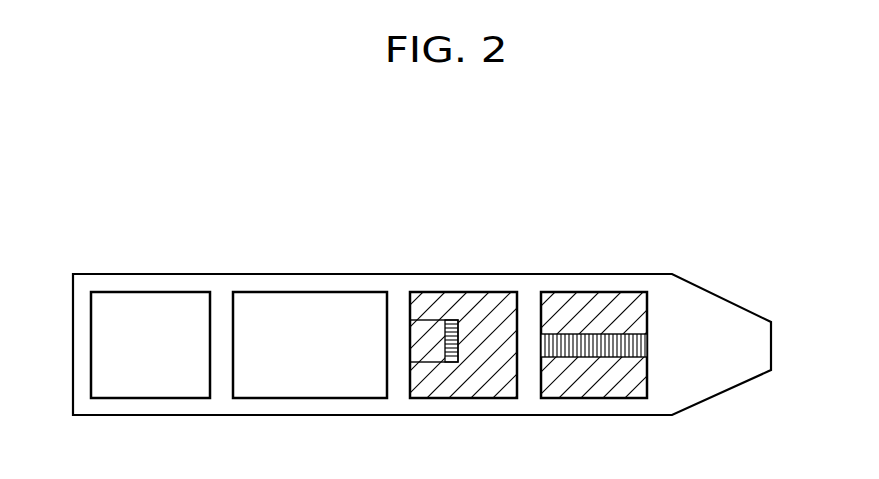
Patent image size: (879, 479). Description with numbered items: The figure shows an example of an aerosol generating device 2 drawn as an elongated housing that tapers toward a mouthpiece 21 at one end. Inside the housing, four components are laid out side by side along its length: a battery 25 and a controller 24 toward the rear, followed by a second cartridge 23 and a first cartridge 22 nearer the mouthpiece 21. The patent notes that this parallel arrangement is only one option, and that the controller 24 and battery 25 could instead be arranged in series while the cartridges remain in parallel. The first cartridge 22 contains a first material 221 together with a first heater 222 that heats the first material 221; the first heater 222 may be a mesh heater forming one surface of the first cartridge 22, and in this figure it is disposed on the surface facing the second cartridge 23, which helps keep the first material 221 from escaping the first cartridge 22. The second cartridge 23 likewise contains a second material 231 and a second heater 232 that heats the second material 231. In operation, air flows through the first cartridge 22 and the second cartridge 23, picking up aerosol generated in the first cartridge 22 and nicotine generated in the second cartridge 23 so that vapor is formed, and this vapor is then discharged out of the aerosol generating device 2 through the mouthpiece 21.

The aerosol generating device 2 is at (716, 188).
The mouthpiece 21 is at (735, 316).
The first cartridge 22 is at (600, 400).
The first material 221 is at (611, 320).
The first heater 222 is at (571, 345).
The second cartridge 23 is at (470, 400).
The second material 231 is at (487, 310).
The second heater 232 is at (452, 326).
The controller 24 is at (333, 400).
The battery 25 is at (162, 400).